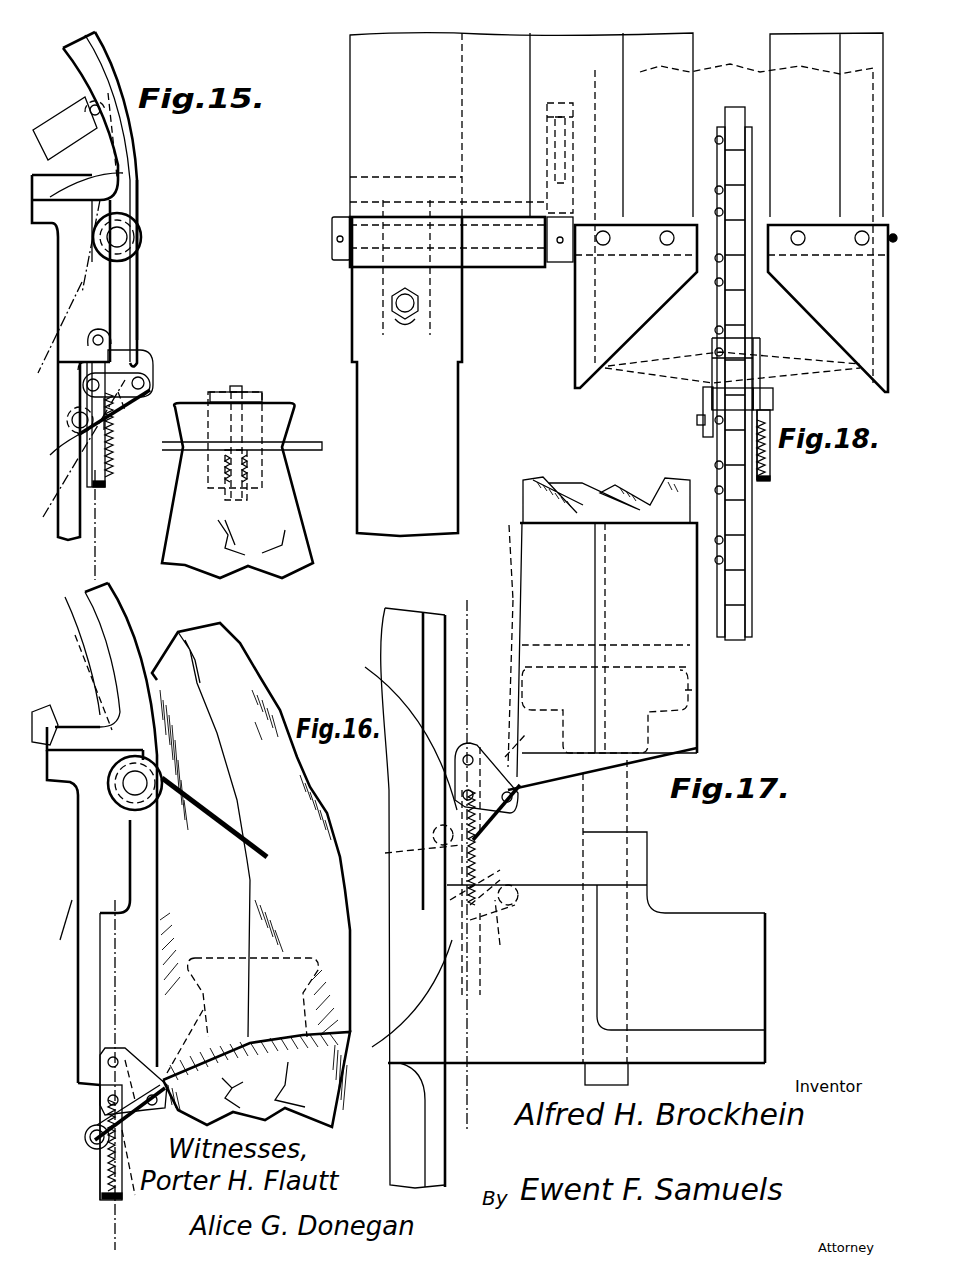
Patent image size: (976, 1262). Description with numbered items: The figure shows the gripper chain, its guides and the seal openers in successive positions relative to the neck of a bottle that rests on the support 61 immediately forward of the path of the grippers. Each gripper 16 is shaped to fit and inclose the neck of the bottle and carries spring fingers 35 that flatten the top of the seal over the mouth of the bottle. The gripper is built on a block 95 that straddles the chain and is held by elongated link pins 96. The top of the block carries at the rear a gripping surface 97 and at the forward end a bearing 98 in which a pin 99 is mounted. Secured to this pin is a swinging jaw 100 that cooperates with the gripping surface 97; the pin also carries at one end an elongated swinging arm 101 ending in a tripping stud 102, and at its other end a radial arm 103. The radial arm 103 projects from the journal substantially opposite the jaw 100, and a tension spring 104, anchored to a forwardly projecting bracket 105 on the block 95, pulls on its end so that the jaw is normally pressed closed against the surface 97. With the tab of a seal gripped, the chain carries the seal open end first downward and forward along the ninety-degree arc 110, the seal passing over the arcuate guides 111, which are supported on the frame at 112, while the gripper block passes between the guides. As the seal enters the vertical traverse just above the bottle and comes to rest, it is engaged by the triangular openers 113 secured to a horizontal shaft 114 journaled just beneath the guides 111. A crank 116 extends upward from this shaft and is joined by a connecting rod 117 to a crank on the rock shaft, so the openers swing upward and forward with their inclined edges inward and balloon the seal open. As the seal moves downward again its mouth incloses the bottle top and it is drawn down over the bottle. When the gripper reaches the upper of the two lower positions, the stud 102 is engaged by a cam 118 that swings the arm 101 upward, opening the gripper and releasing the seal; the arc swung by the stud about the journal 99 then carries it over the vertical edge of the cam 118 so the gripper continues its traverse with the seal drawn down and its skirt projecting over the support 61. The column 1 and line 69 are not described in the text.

In FIG. 15, the column 1 is at (60, 292).
In FIG. 18, the column 1 is at (447, 455).
In FIG. 17, the column 1 is at (565, 894).
In FIG. 16, the column 1 is at (90, 998).
In FIG. 15, the gripper 16 is at (310, 445).
In FIG. 15, the spring fingers 35 is at (240, 388).
In FIG. 17, the support 61 is at (700, 692).
In FIG. 15, the center line 69 is at (98, 528).
In FIG. 16, the center line 69 is at (117, 962).
In FIG. 15, the block 95 is at (110, 462).
In FIG. 18, the block 95 is at (768, 478).
In FIG. 17, the block 95 is at (471, 892).
In FIG. 16, the block 95 is at (118, 1205).
In FIG. 15, the elongated link pins 96 is at (108, 336).
In FIG. 18, the elongated link pins 96 is at (712, 348).
In FIG. 15, the gripping surface 97 is at (130, 365).
In FIG. 17, the gripping surface 97 is at (515, 905).
In FIG. 16, the gripping surface 97 is at (95, 1085).
In FIG. 18, the bearing 98 is at (773, 398).
In FIG. 15, the pin 99 is at (150, 388).
In FIG. 18, the pin 99 is at (735, 405).
In FIG. 17, the pin 99 is at (515, 800).
In FIG. 16, the pin 99 is at (130, 1130).
In FIG. 15, the swinging jaw 100 is at (110, 385).
In FIG. 18, the swinging jaw 100 is at (708, 377).
In FIG. 16, the swinging jaw 100 is at (167, 1075).
In FIG. 15, the swinging arm 101 is at (106, 432).
In FIG. 18, the swinging arm 101 is at (705, 432).
In FIG. 17, the swinging arm 101 is at (523, 937).
In FIG. 16, the swinging arm 101 is at (97, 1130).
In FIG. 15, the tripping stud 102 is at (78, 428).
In FIG. 18, the tripping stud 102 is at (703, 420).
In FIG. 17, the tripping stud 102 is at (443, 830).
In FIG. 16, the tripping stud 102 is at (92, 1148).
In FIG. 15, the radial arm 103 is at (112, 400).
In FIG. 18, the radial arm 103 is at (793, 373).
In FIG. 17, the radial arm 103 is at (506, 813).
In FIG. 16, the radial arm 103 is at (148, 1020).
In FIG. 15, the tension spring 104 is at (78, 458).
In FIG. 18, the tension spring 104 is at (765, 458).
In FIG. 17, the tension spring 104 is at (485, 826).
In FIG. 16, the tension spring 104 is at (147, 1169).
In FIG. 15, the bracket 105 is at (100, 487).
In FIG. 18, the bracket 105 is at (768, 483).
In FIG. 16, the bracket 105 is at (105, 1200).
In FIG. 15, the arc 110 is at (108, 46).
In FIG. 16, the arc 110 is at (120, 605).
In FIG. 15, the arcuate guides 111 is at (117, 68).
In FIG. 18, the arcuate guides 111 is at (616, 208).
In FIG. 16, the arcuate guides 111 is at (117, 640).
In FIG. 15, the frame support 112 is at (123, 173).
In FIG. 16, the frame support 112 is at (70, 765).
In FIG. 15, the triangular openers 113 is at (134, 305).
In FIG. 18, the triangular openers 113 is at (610, 292).
In FIG. 16, the triangular openers 113 is at (220, 827).
In FIG. 15, the horizontal shaft 114 is at (118, 237).
In FIG. 18, the horizontal shaft 114 is at (335, 232).
In FIG. 16, the horizontal shaft 114 is at (138, 790).
In FIG. 15, the crank 116 is at (79, 193).
In FIG. 18, the crank 116 is at (571, 152).
In FIG. 16, the crank 116 is at (95, 690).
In FIG. 15, the connecting rod 117 is at (58, 127).
In FIG. 18, the connecting rod 117 is at (563, 100).
In FIG. 17, the cam 118 is at (405, 851).